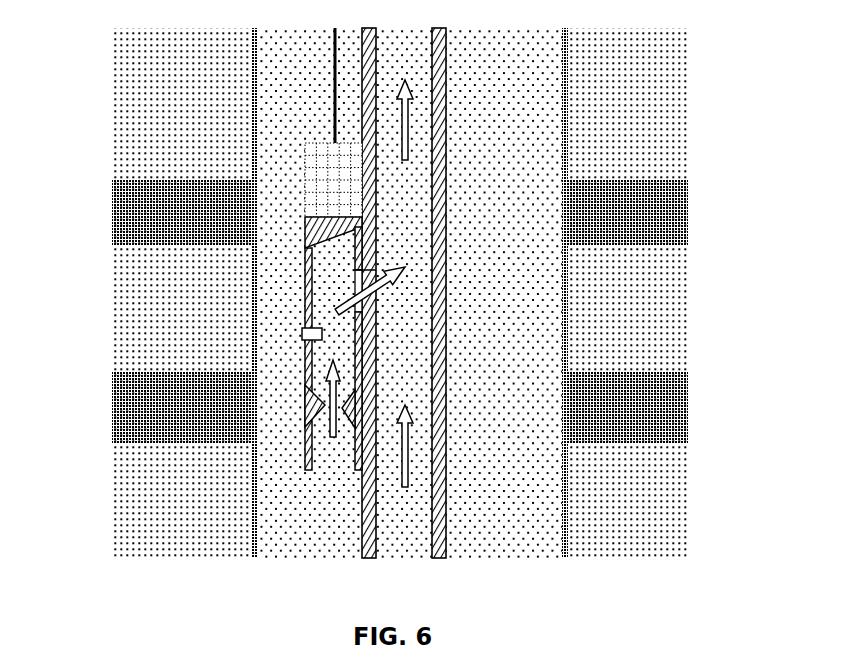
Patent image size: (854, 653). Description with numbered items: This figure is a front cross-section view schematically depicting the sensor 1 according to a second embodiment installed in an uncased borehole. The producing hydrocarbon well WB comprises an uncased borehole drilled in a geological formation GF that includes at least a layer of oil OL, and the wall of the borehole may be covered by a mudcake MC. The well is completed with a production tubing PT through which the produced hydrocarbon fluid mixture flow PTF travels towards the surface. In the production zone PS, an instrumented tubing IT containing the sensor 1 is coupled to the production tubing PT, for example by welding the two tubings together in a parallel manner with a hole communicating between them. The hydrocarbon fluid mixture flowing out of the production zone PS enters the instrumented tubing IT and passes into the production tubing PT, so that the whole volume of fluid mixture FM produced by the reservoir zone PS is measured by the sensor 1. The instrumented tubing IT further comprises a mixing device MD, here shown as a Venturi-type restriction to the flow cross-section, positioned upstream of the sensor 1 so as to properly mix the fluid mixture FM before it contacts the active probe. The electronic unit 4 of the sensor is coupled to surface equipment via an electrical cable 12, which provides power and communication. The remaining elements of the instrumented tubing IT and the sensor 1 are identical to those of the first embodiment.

The electrical cable 12 is at (333, 110).
The electronic unit 4 is at (296, 163).
The layer of oil OL is at (125, 211).
The instrumented tubing IT is at (305, 255).
The sensor 1 is at (293, 335).
The mixing device MD is at (320, 401).
The fluid mixture FM is at (334, 440).
The geological formation GF is at (183, 541).
The mudcake MC is at (258, 552).
The production tubing PT is at (435, 130).
The production zone PS is at (693, 177).
The produced hydrocarbon fluid mixture flow PTF is at (405, 466).
The well bore WB is at (531, 548).